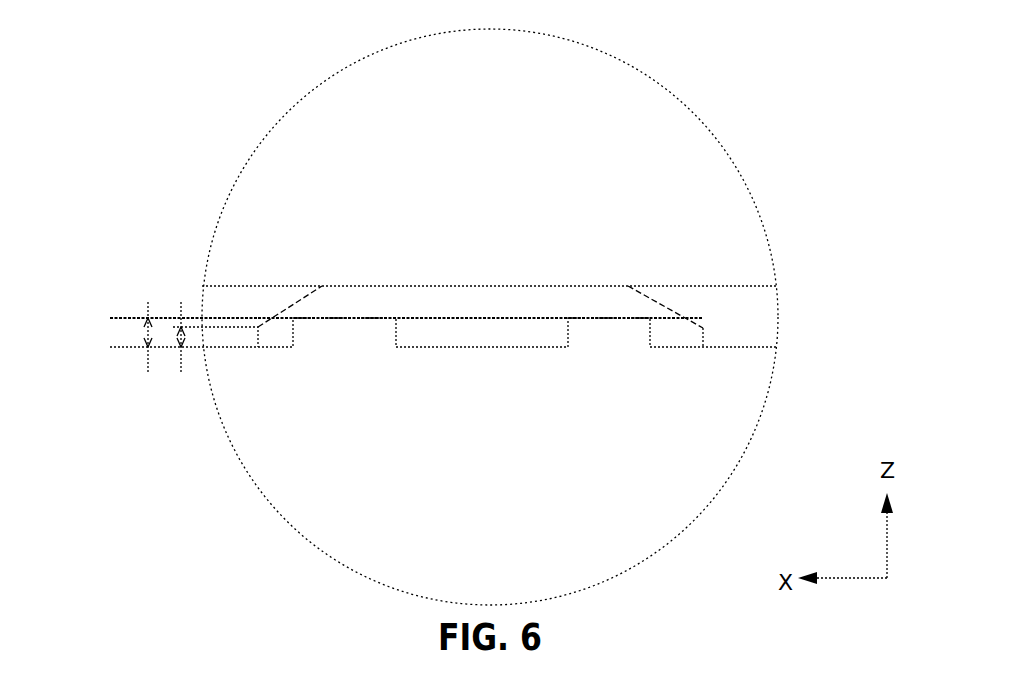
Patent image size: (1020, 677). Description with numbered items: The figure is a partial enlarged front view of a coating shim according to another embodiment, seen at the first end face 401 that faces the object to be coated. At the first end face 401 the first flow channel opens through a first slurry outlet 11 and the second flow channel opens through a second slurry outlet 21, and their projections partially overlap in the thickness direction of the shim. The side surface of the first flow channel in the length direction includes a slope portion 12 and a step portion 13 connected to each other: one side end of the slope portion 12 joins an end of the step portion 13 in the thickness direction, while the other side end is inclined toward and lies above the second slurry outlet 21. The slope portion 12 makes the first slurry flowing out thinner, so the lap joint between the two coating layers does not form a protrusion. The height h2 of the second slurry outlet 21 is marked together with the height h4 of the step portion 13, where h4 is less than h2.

The first slurry outlet 11 is at (222, 303).
The slope portion 12 is at (287, 317).
The step portion 13 is at (258, 330).
The second slurry outlet 21 is at (332, 333).
The first end face 401 is at (485, 304).
The height of the second slurry outlet h2 is at (147, 325).
The height of the step portion h4 is at (181, 333).